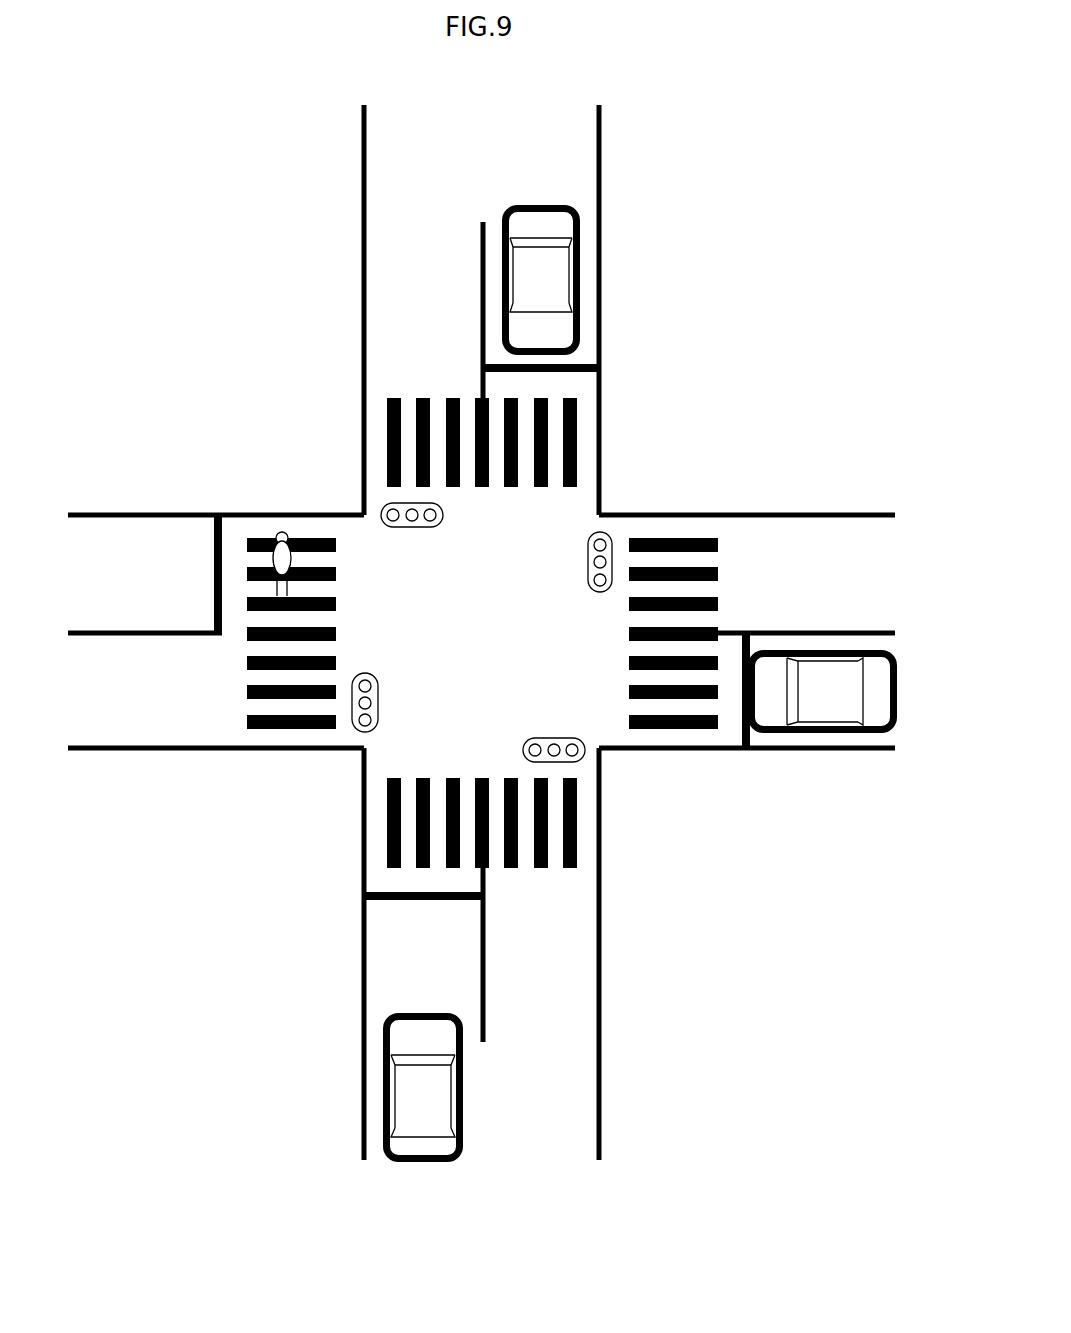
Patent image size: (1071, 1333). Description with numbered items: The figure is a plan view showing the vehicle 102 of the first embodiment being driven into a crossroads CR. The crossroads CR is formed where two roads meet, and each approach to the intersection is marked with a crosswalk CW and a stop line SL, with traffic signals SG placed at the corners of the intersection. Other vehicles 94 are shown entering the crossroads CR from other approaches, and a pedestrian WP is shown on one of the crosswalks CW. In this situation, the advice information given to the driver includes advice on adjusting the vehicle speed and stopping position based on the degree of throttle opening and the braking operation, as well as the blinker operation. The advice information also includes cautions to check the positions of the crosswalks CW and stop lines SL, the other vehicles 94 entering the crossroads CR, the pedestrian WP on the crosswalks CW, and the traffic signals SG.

The other vehicles 94 is at (540, 200).
The vehicle 102 is at (425, 1167).
The crosswalks CW is at (388, 392).
The stop lines SL is at (500, 362).
The traffic signals SG is at (411, 531).
The crossroads CR is at (613, 497).
The pedestrian WP is at (278, 530).